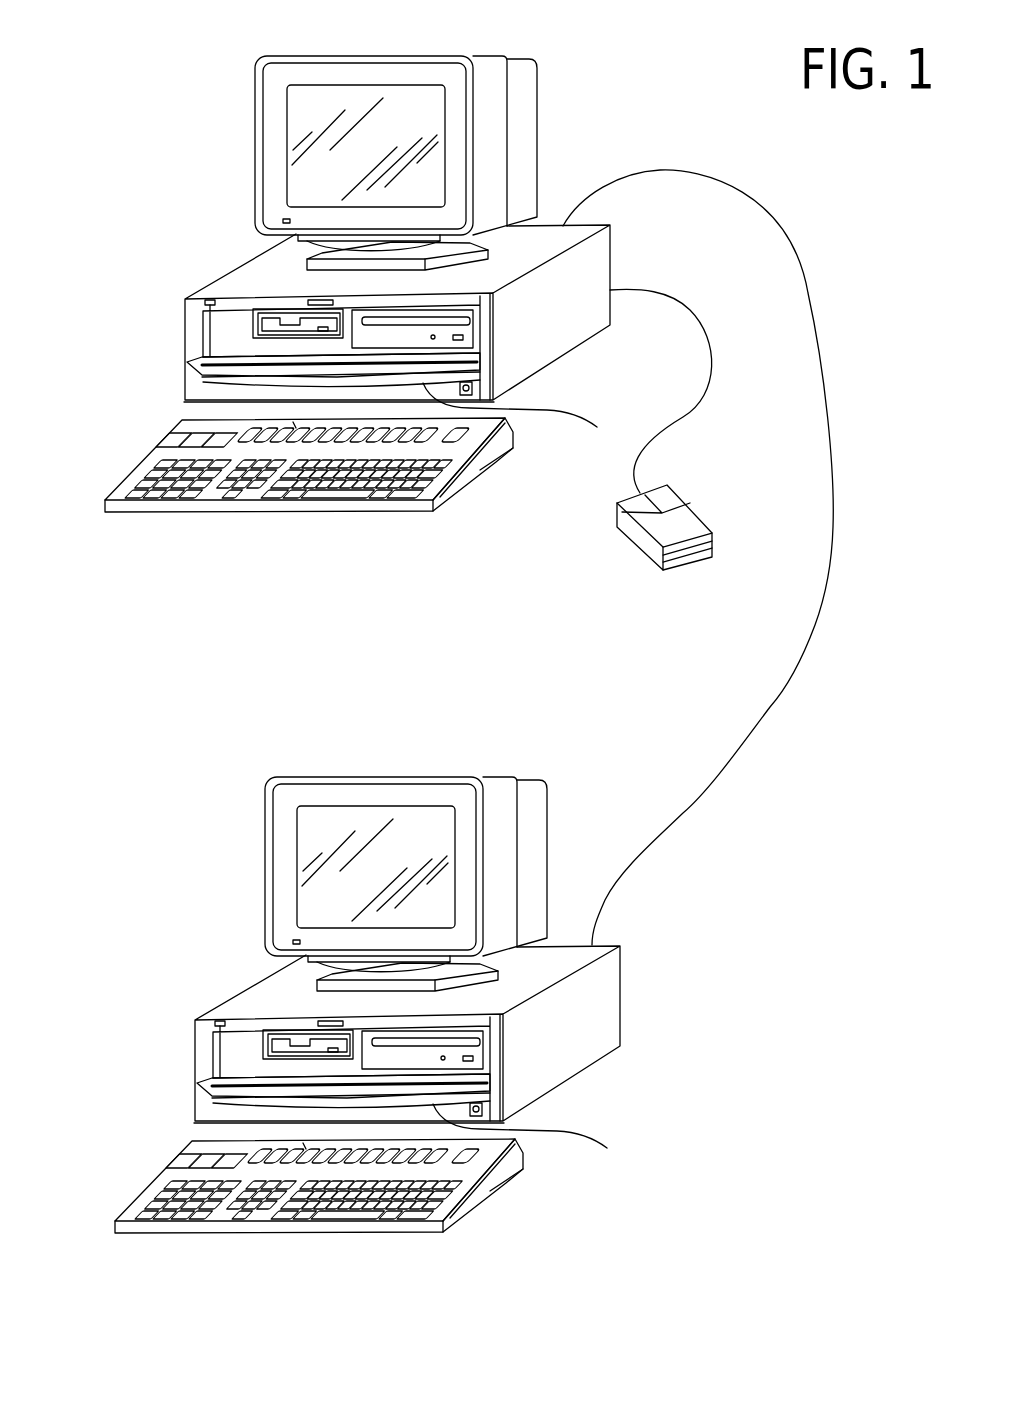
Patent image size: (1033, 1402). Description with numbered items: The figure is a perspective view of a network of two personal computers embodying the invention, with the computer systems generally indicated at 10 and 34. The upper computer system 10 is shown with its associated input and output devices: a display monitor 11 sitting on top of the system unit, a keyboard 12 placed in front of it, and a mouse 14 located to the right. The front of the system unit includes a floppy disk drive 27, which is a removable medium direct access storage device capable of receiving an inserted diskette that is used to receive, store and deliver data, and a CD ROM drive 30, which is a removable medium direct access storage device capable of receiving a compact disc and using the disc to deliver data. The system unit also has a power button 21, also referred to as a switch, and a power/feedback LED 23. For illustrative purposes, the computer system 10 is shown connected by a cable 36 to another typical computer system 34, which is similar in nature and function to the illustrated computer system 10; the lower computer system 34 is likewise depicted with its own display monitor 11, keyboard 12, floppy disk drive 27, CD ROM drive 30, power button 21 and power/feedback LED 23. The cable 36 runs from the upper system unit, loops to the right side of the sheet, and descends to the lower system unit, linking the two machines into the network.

The computer system 10 is at (203, 95).
The display monitor 11 is at (538, 113).
The keyboard 12 is at (407, 512).
The mouse 14 is at (697, 507).
The power button 21 is at (487, 388).
The power/feedback LED 23 is at (533, 776).
The floppy disk drive 27 is at (270, 323).
The CD ROM drive 30 is at (470, 328).
The computer system 34 is at (212, 815).
The cable 36 is at (770, 707).